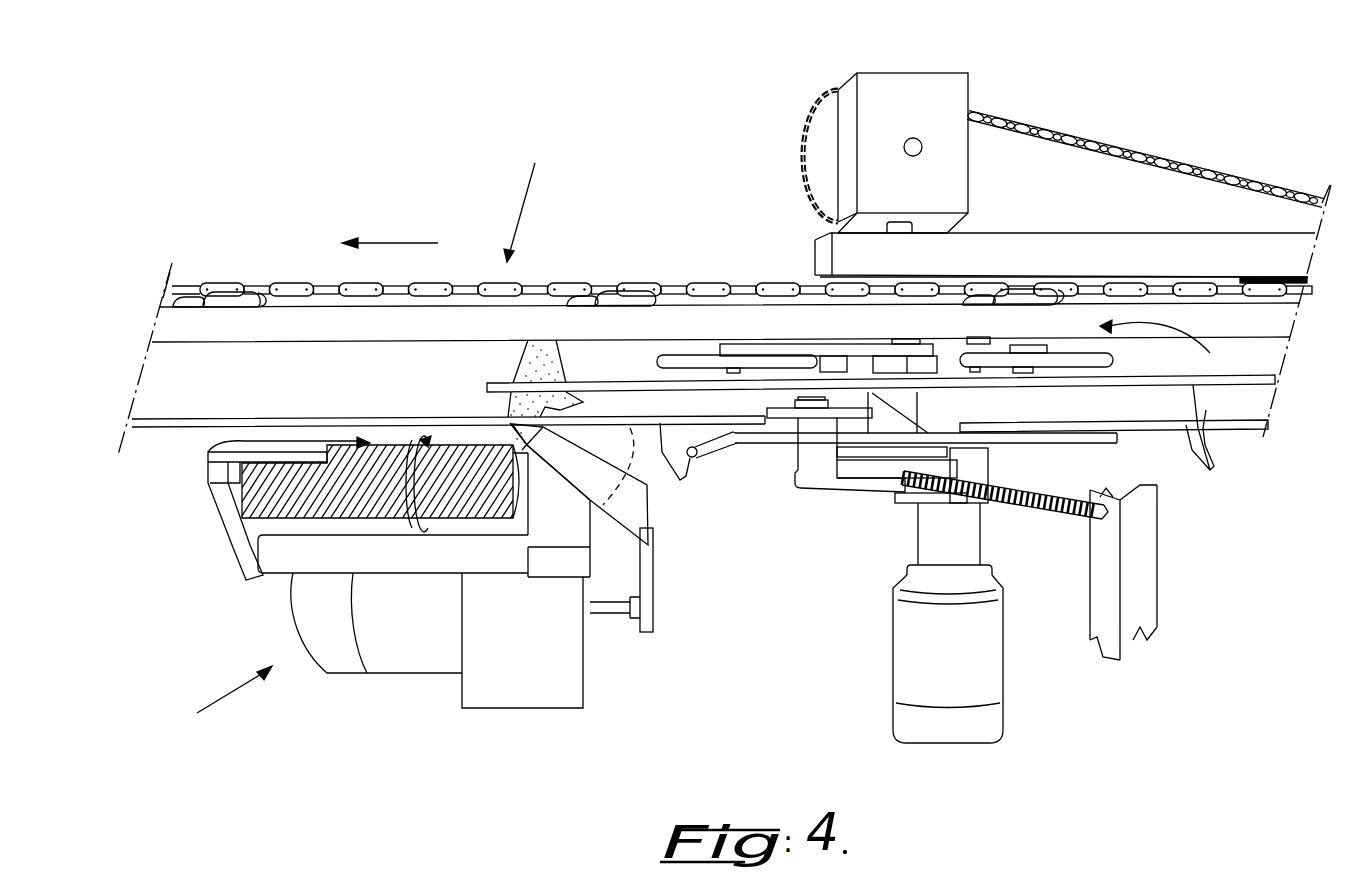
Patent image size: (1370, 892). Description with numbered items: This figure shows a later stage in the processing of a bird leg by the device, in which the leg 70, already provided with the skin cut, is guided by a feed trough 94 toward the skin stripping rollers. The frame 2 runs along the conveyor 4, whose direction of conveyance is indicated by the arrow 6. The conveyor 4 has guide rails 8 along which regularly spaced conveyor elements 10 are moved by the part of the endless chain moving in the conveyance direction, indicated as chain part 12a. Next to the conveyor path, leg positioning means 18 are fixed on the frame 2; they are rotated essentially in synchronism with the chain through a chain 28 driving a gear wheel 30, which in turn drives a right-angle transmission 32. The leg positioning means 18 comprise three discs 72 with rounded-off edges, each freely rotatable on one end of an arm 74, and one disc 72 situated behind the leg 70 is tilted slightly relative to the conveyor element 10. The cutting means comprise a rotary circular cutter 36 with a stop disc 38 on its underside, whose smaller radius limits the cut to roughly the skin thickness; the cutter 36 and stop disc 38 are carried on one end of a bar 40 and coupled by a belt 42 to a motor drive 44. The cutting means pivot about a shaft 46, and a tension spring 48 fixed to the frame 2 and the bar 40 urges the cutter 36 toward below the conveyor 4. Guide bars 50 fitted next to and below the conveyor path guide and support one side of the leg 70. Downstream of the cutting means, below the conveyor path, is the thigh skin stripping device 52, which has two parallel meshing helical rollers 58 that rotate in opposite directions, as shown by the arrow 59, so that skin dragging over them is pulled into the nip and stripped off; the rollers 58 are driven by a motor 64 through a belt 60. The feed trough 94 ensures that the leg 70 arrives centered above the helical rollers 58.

The frame 2 is at (1073, 247).
The conveyor 4 is at (531, 205).
The arrow 6 is at (395, 240).
The guide rails 8 is at (1278, 322).
The conveyor elements 10 is at (216, 298).
The part of the chain 12a is at (718, 288).
The leg positioning means 18 is at (881, 356).
The chain 28 is at (1020, 122).
The gear wheel 30 is at (830, 137).
The right-angle transmission 32 is at (877, 93).
The rotary circular cutter 36 is at (762, 402).
The stop disc 38 is at (790, 415).
The bar 40 is at (838, 490).
The belt 42 is at (862, 488).
The motor drive 44 is at (985, 650).
The shaft 46 is at (970, 548).
The tension spring 48 is at (1068, 510).
The guide bars 50 is at (951, 447).
The thigh skin stripping device 52 is at (435, 571).
The helical rollers 58 is at (243, 493).
The arrow 59 is at (418, 443).
The belt 60 is at (645, 586).
The motor 64 is at (413, 668).
The leg 70 is at (519, 420).
The discs 72 is at (665, 362).
The arms 74 is at (846, 317).
The feed trough 94 is at (645, 508).